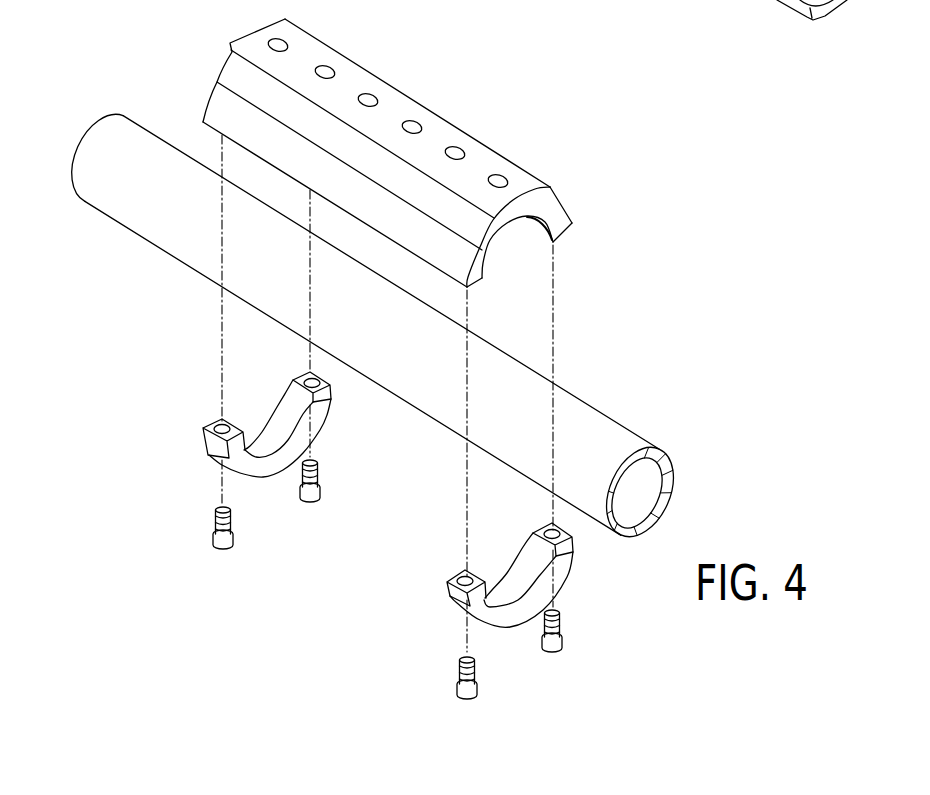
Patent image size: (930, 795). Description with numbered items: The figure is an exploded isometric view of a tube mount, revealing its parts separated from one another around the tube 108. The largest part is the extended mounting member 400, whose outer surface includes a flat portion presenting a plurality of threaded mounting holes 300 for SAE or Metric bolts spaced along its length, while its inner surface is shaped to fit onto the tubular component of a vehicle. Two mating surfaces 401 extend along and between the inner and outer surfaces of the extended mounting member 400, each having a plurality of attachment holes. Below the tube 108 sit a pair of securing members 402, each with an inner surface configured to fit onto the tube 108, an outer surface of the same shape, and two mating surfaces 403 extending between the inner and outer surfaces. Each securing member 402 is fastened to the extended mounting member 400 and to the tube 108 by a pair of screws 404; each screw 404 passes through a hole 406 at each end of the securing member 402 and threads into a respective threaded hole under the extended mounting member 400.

The tube 108 is at (596, 391).
The threaded mounting holes 300 is at (279, 40).
The extended mounting member 400 is at (572, 203).
The mating surfaces 401 is at (553, 240).
The securing members 402 is at (323, 424).
The mating surfaces 403 is at (540, 531).
The screws 404 is at (233, 546).
The hole 406 is at (305, 375).